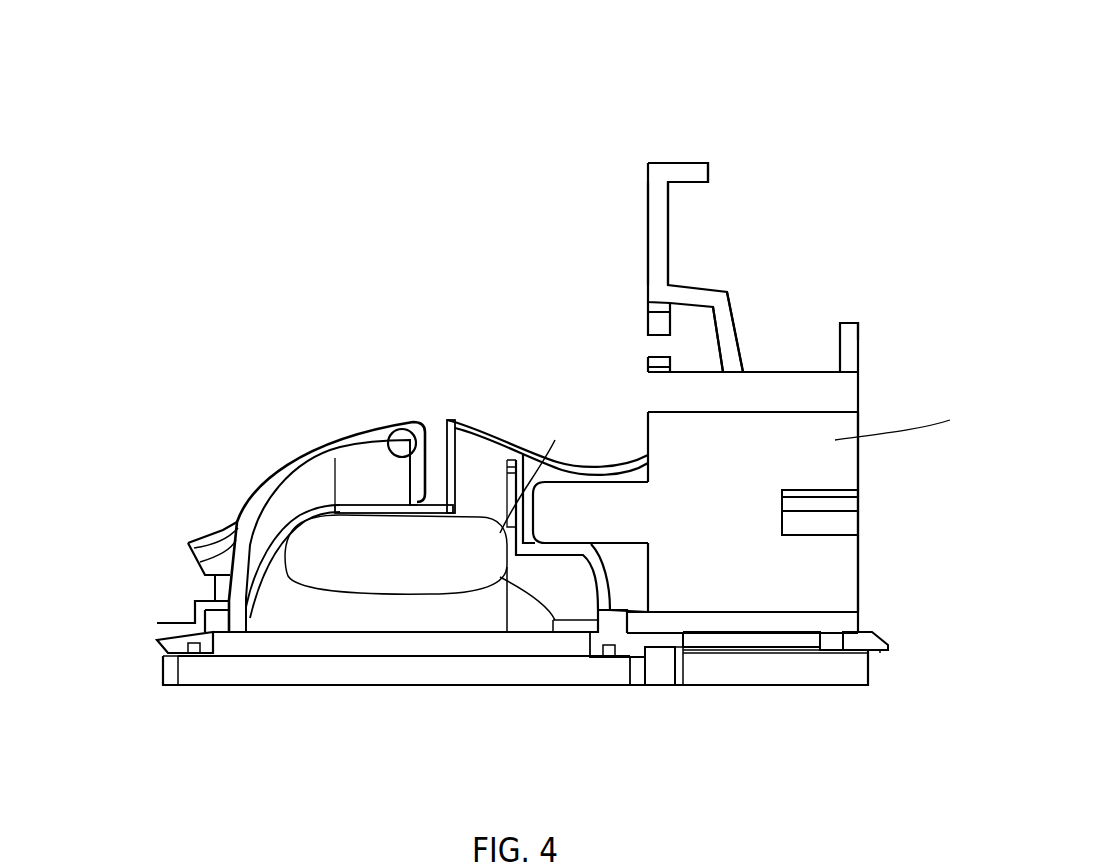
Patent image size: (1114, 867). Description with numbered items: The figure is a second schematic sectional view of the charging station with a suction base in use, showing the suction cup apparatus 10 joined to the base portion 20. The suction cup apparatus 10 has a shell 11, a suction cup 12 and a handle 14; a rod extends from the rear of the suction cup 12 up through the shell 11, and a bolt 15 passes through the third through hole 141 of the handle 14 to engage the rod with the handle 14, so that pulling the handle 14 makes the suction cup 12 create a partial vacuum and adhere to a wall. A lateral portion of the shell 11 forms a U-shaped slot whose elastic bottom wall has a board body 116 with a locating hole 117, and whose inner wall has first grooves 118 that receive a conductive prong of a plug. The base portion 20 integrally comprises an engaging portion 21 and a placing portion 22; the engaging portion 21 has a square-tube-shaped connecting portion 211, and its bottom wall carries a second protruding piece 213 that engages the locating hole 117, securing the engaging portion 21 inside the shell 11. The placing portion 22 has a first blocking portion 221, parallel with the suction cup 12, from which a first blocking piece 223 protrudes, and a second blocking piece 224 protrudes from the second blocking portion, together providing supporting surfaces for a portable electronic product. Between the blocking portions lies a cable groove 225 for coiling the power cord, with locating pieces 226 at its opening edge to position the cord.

The suction cup apparatus 10 is at (561, 443).
The shell 11 is at (180, 620).
The suction cup 12 is at (380, 690).
The handle 14 is at (561, 504).
The bolt 15 is at (466, 376).
The third through hole 141 is at (407, 434).
The first grooves 118 is at (560, 465).
The board body 116 is at (884, 633).
The locating hole 117 is at (878, 650).
The base portion 20 is at (794, 426).
The engaging portion 21 is at (754, 615).
The connecting portion 211 is at (692, 612).
The second protruding piece 213 is at (830, 650).
The placing portion 22 is at (780, 333).
The first blocking portion 221 is at (808, 372).
The first blocking piece 223 is at (858, 341).
The second blocking piece 224 is at (688, 172).
The cable groove 225 is at (695, 307).
The locating pieces 226 is at (657, 328).